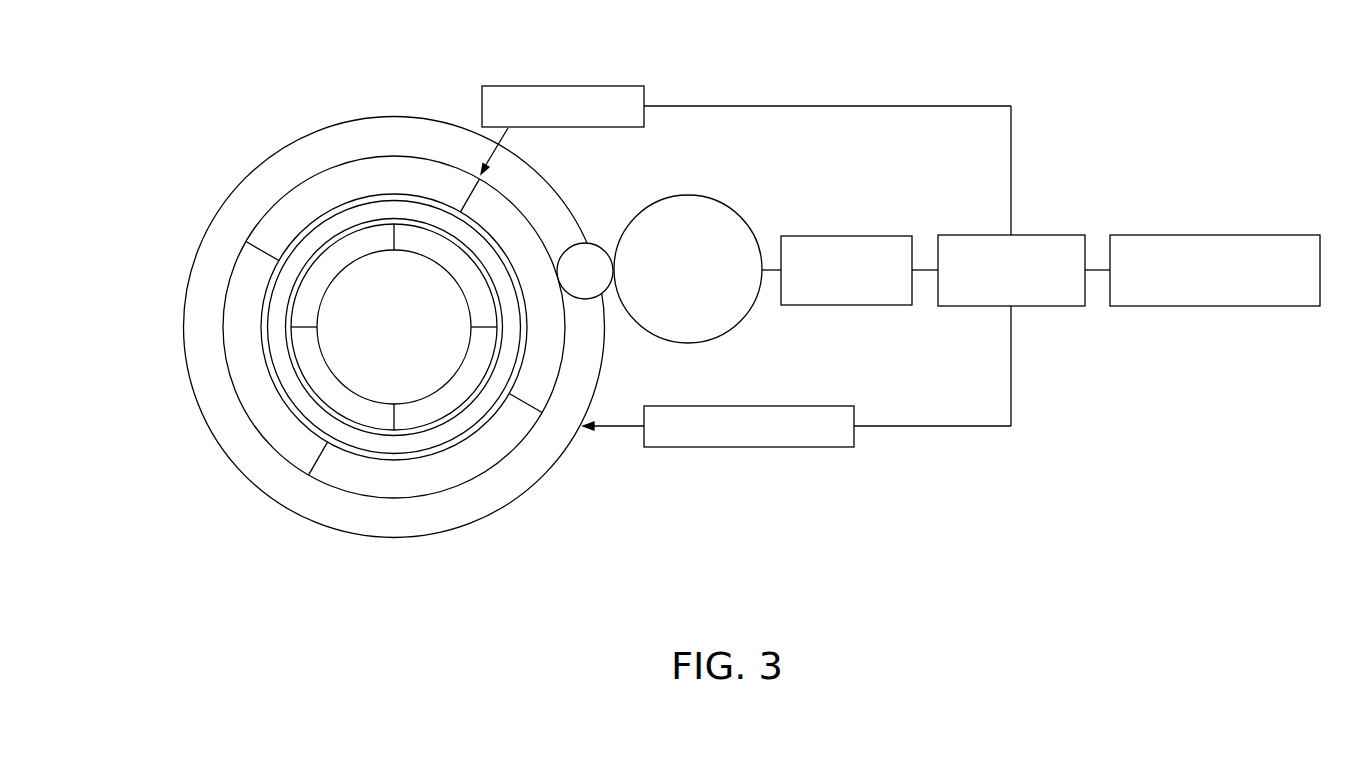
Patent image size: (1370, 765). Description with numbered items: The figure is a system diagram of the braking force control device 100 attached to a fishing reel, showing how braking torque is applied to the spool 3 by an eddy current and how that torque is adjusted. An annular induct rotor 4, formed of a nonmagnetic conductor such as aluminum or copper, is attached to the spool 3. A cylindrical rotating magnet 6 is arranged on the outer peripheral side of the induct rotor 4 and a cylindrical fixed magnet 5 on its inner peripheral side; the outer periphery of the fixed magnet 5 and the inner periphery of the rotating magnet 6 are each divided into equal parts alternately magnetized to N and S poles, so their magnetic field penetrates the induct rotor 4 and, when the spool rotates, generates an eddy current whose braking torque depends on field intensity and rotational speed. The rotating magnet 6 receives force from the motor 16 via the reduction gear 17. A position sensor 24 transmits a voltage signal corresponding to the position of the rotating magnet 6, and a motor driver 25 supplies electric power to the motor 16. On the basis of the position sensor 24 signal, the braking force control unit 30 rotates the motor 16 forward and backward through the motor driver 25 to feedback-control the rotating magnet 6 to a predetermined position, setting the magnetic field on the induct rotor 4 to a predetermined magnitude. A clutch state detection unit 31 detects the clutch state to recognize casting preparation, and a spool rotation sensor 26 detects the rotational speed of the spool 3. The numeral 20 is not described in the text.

The braking force control device 100 is at (689, 47).
The spool 3 is at (490, 488).
The induct rotor 4 is at (346, 437).
The fixed magnet 5 is at (417, 240).
The rotating magnet 6 is at (323, 188).
The motor 16 is at (715, 233).
The reduction gear 17 is at (585, 257).
The brake unit 20 is at (275, 118).
The position sensor 24 is at (559, 85).
The motor driver 25 is at (848, 305).
The spool rotation sensor 26 is at (752, 449).
The braking force control unit 30 is at (1052, 307).
The clutch state detection unit 31 is at (1217, 307).